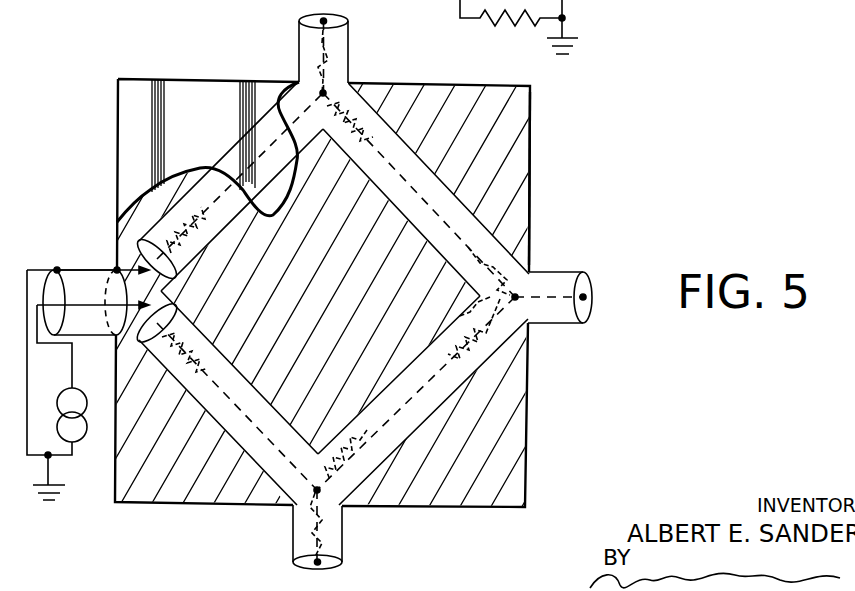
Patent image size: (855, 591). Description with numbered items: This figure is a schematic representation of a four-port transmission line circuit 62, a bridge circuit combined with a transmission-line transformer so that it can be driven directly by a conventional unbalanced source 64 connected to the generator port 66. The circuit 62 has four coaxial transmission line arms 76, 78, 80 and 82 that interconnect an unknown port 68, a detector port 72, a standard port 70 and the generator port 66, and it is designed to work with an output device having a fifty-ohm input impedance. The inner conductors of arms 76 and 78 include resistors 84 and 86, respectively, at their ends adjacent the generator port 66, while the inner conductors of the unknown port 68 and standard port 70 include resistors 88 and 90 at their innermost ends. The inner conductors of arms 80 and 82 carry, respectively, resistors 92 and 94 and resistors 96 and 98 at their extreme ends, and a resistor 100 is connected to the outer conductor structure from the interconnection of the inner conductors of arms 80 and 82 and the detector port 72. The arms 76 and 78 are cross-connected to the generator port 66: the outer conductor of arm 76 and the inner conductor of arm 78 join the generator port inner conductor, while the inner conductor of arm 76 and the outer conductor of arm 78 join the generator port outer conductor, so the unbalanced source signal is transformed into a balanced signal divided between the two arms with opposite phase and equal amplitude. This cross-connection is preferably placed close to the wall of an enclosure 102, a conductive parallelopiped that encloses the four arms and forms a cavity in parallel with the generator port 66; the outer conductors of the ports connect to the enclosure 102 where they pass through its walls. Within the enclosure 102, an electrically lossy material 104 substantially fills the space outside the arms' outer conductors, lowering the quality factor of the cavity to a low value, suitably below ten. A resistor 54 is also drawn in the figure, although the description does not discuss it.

The resistor 54 is at (514, 26).
The fluidic device 62 is at (640, 117).
The current source 64 is at (80, 443).
The inlet tube 66 is at (67, 268).
The upper outlet tube 68 is at (352, 50).
The lower outlet tube 70 is at (348, 542).
The right outlet tube 72 is at (560, 270).
The upper left channel 76 is at (244, 214).
The lower left channel 78 is at (238, 366).
The upper right channel 80 is at (438, 165).
The lower right channel 82 is at (430, 420).
The resistance element 84 is at (190, 252).
The resistance element 86 is at (195, 326).
The resistance element 88 is at (312, 62).
The resistance element 90 is at (310, 530).
The resistance element 92 is at (370, 128).
The resistance element 94 is at (487, 230).
The resistance element 96 is at (347, 432).
The resistance element 98 is at (484, 368).
The junction resistance element 100 is at (478, 300).
The block body 102 is at (205, 80).
The block wall 104 is at (517, 152).